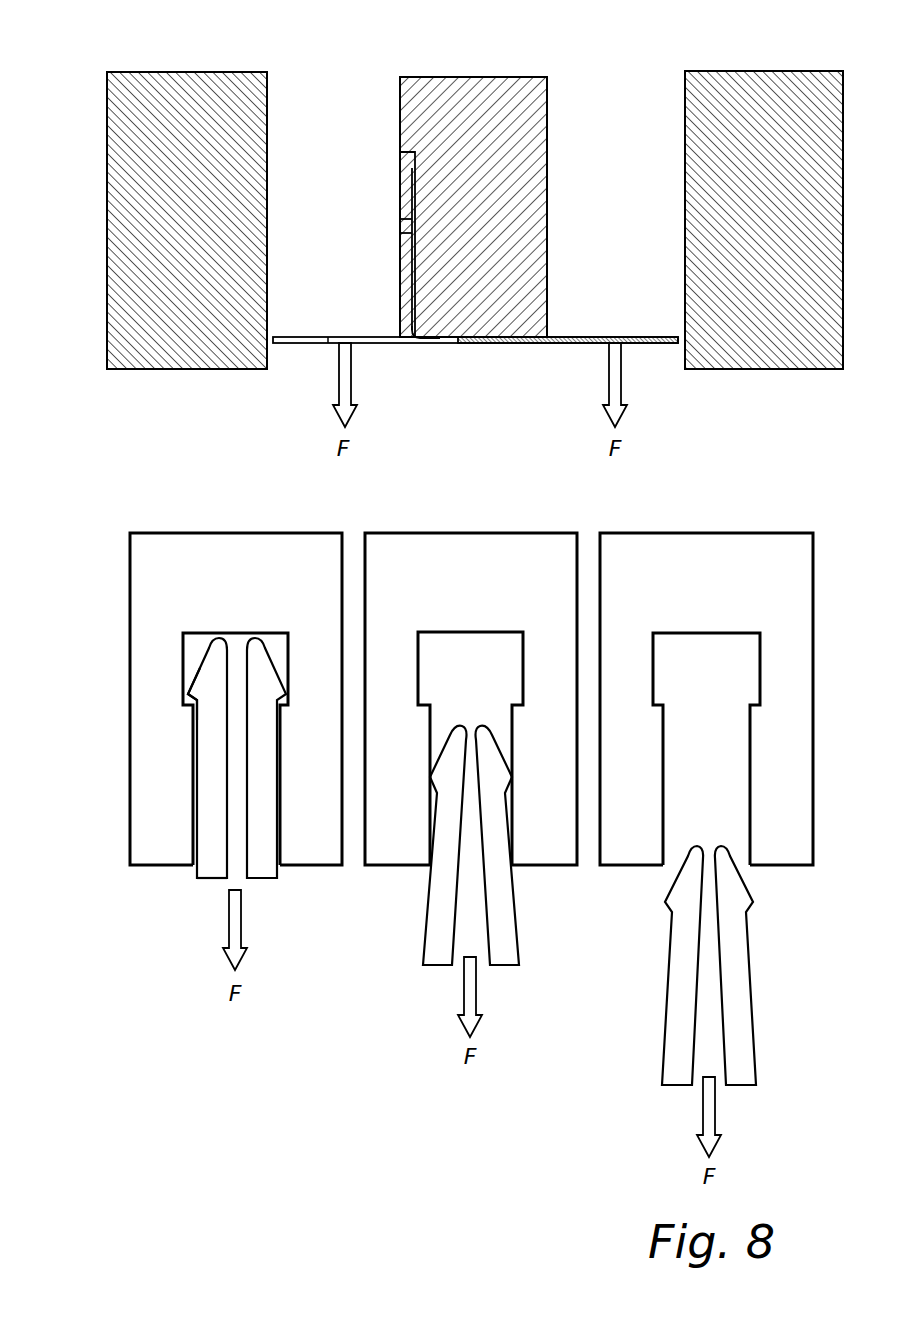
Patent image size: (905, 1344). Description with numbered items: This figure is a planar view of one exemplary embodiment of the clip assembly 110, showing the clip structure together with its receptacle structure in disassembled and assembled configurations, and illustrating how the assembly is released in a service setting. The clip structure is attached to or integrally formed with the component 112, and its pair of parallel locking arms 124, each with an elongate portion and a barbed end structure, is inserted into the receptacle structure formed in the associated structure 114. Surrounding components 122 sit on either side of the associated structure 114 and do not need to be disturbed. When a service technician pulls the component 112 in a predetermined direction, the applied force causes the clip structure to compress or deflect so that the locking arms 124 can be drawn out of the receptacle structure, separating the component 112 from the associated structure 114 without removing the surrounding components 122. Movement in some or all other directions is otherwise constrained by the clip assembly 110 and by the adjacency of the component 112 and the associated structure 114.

The clip assembly 110 is at (391, 583).
The component 112 is at (573, 345).
The associated structure 114 is at (475, 77).
The surrounding components 122 is at (180, 72).
The locking arms 124 is at (183, 801).